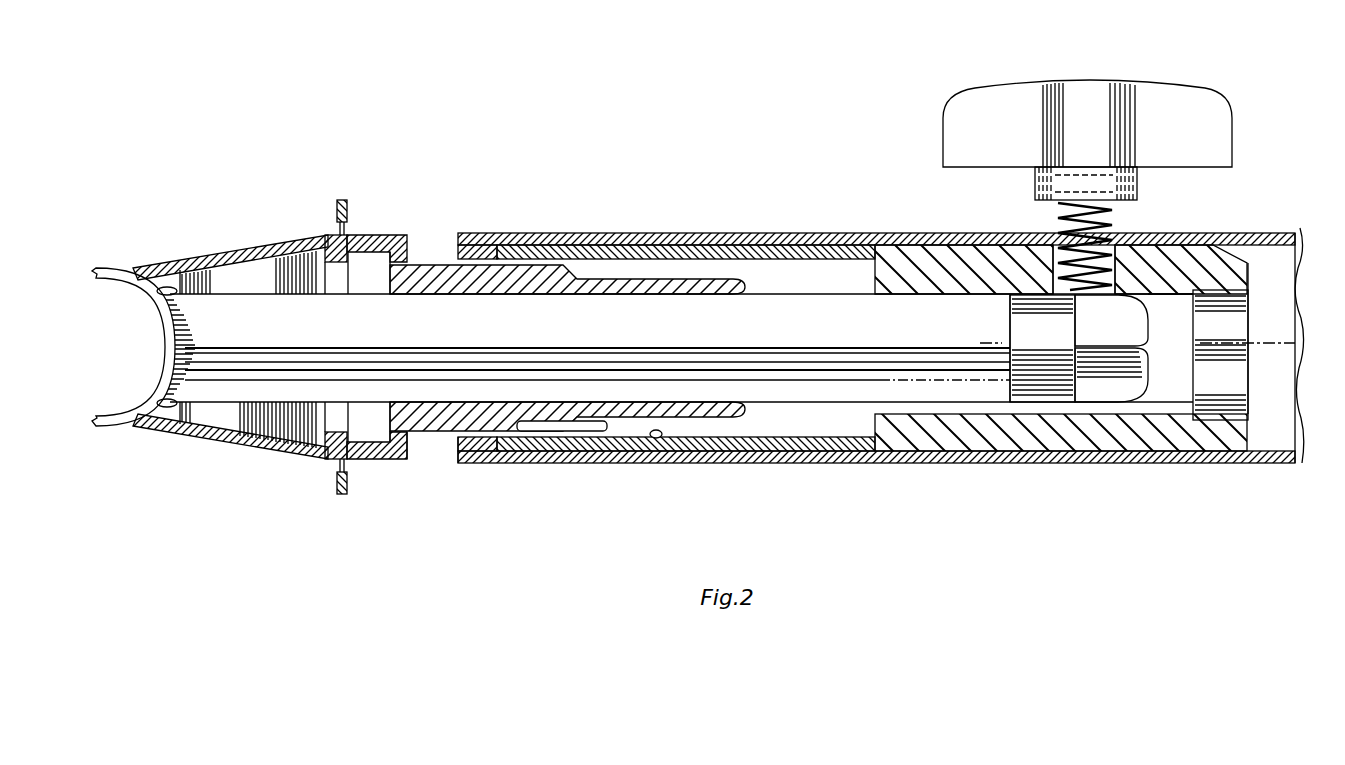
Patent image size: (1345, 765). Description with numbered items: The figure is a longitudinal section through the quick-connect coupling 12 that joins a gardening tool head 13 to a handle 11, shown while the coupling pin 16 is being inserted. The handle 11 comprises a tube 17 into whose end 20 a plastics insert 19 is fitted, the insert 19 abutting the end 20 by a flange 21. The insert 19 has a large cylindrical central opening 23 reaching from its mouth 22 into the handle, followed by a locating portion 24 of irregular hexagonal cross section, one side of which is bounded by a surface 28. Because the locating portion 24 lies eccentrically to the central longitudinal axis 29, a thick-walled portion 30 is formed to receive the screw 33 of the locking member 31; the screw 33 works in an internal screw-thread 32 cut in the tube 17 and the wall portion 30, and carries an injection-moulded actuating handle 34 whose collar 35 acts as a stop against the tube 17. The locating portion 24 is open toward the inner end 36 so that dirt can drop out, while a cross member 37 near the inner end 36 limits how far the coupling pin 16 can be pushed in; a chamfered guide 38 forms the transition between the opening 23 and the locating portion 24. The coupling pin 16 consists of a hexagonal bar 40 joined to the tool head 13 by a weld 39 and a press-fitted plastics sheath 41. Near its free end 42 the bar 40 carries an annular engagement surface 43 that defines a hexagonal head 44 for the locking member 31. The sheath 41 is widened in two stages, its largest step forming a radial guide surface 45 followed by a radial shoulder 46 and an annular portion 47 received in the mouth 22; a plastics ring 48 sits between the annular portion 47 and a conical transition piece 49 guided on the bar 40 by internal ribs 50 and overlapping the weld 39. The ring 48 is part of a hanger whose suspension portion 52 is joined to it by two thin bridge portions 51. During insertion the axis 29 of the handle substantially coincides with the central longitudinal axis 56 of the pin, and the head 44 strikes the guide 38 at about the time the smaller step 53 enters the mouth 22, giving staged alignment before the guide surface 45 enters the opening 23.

The handle 11 is at (1258, 188).
The quick-connect coupling 12 is at (567, 229).
The gardening tool head 13 is at (108, 430).
The coupling pin 16 is at (326, 475).
The tube 17 is at (1226, 228).
The insert 19 is at (905, 282).
The end of the tube 20 is at (470, 466).
The flange 21 is at (470, 250).
The mouth 22 is at (455, 458).
The cylindrical central opening 23 is at (655, 440).
The locating portion 24 is at (1173, 412).
The surface 28 is at (1172, 294).
The central longitudinal axis 29 is at (1255, 343).
The thick-walled portion 30 is at (1182, 258).
The locking member 31 is at (1152, 102).
The internal screw-thread 32 is at (1055, 262).
The screw 33 is at (1050, 222).
The actuating handle 34 is at (1080, 100).
The collar 35 is at (1135, 184).
The inner end of the insert 36 is at (1250, 268).
The cross member 37 is at (1228, 395).
The guide 38 is at (870, 272).
The weld 39 is at (183, 438).
The hexagonal bar 40 is at (250, 430).
The plastics sheath 41 is at (515, 280).
The free end 42 is at (1150, 350).
The engagement surface 43 is at (1045, 378).
The hexagonal head 44 is at (1105, 392).
The radial guide surface 45 is at (478, 455).
The radial shoulder 46 is at (408, 452).
The annular portion 47 is at (398, 236).
The plastics ring 48 is at (330, 260).
The conical transition piece 49 is at (212, 252).
The internal ribs 50 is at (248, 268).
The bridge portions 51 is at (356, 238).
The suspension portion 52 is at (342, 198).
The smaller step 53 is at (567, 433).
The central longitudinal axis of the coupling pin 56 is at (232, 348).